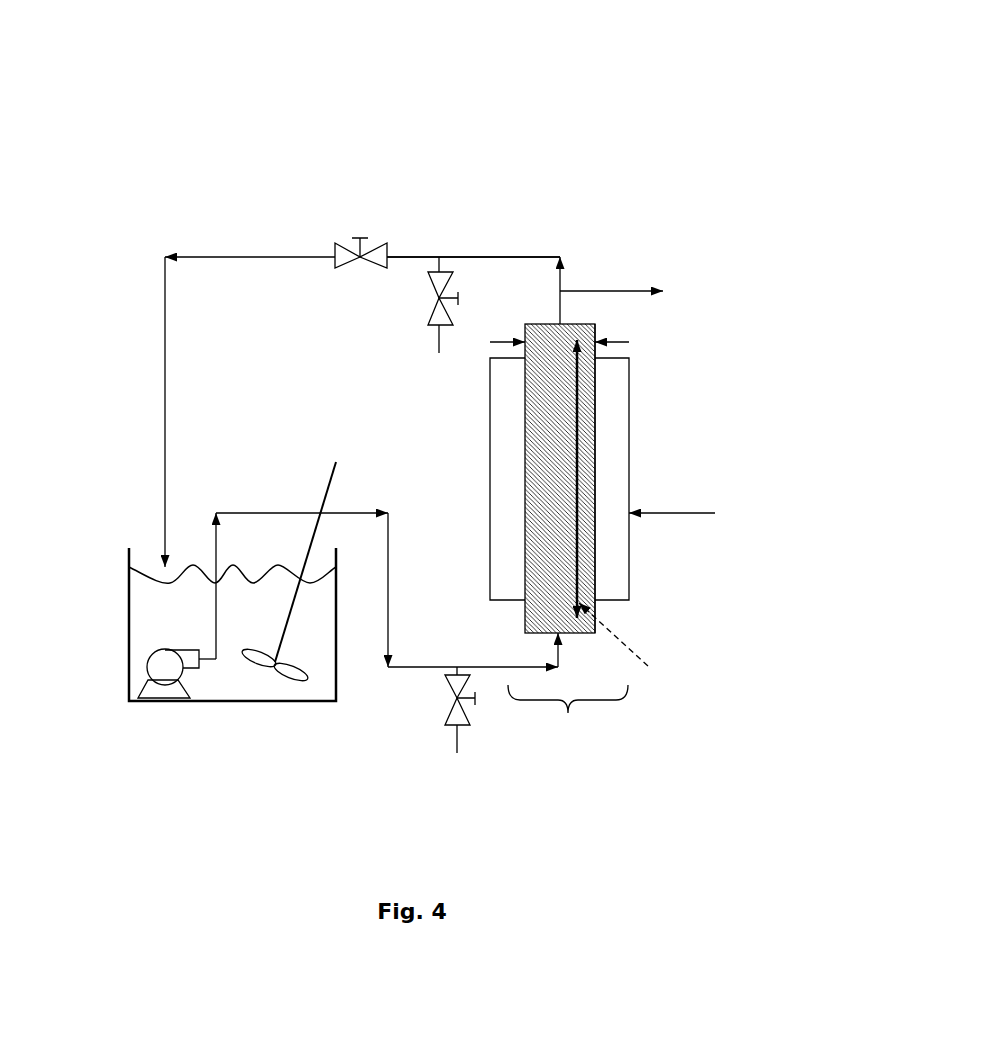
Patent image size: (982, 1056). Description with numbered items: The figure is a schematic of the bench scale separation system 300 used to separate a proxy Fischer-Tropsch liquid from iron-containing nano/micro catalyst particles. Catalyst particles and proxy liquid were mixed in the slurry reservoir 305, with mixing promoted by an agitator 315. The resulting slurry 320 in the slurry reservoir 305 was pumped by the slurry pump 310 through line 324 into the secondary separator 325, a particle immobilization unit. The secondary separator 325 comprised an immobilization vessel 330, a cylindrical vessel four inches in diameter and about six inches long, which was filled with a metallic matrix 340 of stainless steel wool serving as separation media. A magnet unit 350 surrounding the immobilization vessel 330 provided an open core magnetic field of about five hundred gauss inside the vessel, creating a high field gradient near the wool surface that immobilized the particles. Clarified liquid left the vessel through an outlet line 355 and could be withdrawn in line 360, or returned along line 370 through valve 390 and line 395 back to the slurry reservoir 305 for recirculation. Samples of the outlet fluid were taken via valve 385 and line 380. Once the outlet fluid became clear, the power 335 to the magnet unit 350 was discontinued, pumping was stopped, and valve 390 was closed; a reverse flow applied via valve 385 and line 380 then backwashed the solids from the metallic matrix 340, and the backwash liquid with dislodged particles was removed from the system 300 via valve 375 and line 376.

The bench scale separation system 300 is at (526, 97).
The slurry reservoir 305 is at (128, 617).
The slurry pump 310 is at (165, 685).
The agitator 315 is at (289, 636).
The slurry 320 is at (232, 589).
The line 324 is at (387, 581).
The secondary separator 325 is at (568, 716).
The immobilization vessel 330 is at (596, 550).
The power 335 is at (690, 513).
The metallic matrix 340 is at (557, 499).
The magnet unit 350 is at (630, 424).
The column outlet line 355 is at (540, 290).
The line 360 is at (631, 291).
The return line 370 is at (473, 248).
The valve 375 is at (450, 700).
The line 376 is at (455, 751).
The line 380 is at (441, 354).
The valve 385 is at (432, 300).
The valve 390 is at (377, 237).
The line 395 is at (362, 400).